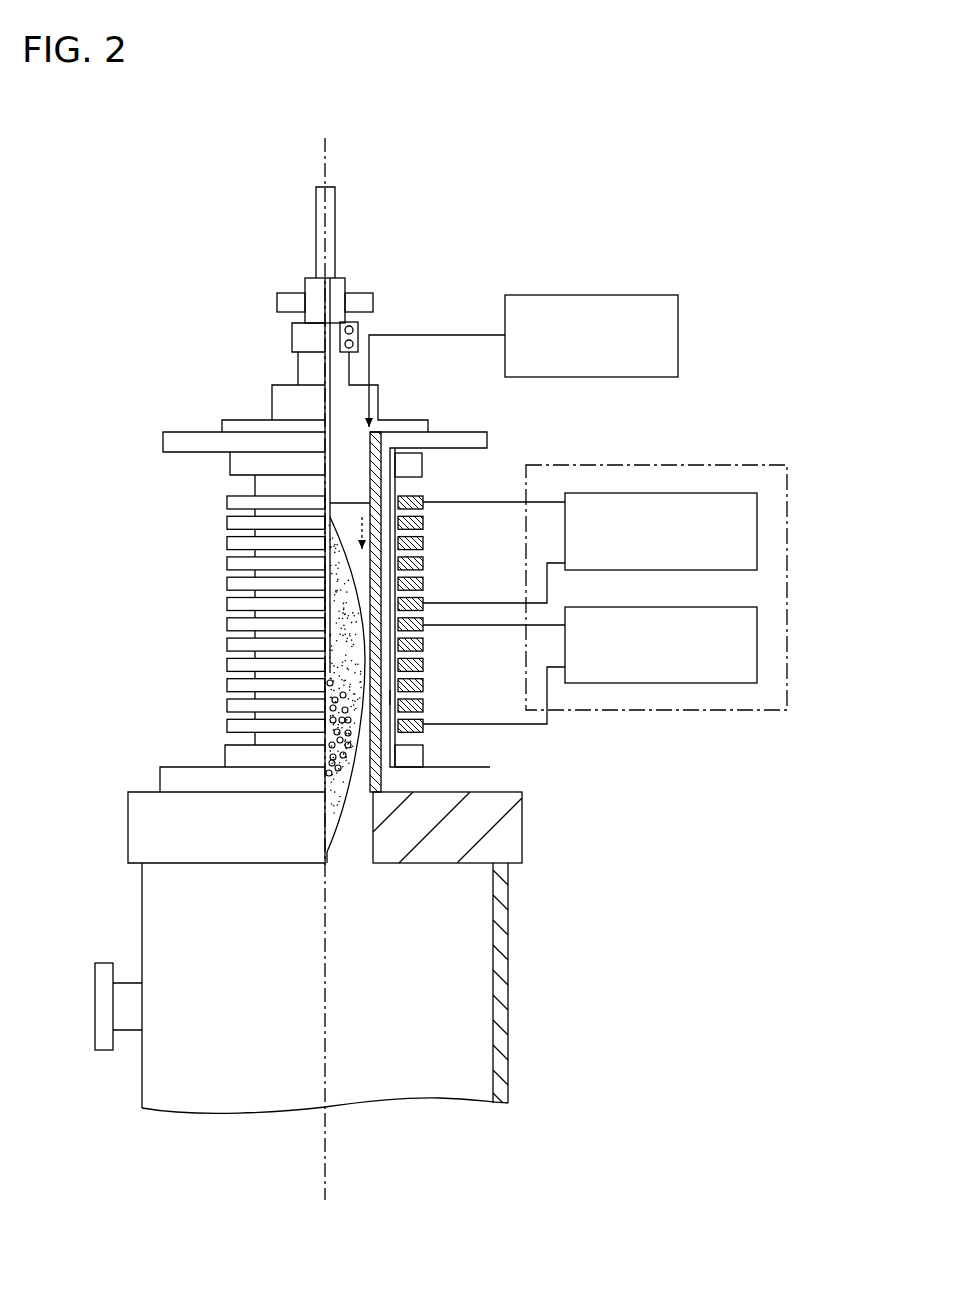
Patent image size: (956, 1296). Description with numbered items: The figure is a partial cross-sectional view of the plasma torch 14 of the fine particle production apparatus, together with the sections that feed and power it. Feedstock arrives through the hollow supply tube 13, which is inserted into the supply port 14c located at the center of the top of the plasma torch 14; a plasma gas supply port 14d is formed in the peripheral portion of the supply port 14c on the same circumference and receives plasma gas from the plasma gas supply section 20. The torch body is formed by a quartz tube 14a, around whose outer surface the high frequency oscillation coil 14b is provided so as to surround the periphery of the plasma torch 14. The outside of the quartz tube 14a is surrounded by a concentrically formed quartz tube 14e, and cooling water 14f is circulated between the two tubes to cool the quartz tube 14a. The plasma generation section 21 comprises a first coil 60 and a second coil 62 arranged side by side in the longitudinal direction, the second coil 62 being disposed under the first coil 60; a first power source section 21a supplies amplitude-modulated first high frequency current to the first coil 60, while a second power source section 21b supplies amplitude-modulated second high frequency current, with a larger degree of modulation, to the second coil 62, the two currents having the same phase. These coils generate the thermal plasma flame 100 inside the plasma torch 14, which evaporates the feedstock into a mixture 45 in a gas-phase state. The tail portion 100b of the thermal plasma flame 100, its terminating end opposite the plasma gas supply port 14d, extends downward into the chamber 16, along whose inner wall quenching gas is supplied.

The supply tube 13 is at (315, 207).
The plasma torch 14 is at (461, 218).
The quartz tube 14a is at (381, 483).
The high frequency oscillation coil 14b is at (207, 556).
The supply port 14c is at (330, 277).
The plasma gas supply port 14d is at (383, 438).
The quartz tube 14e is at (393, 698).
The cooling water 14f is at (385, 738).
The chamber 16 is at (472, 943).
The plasma gas supply section 20 is at (640, 295).
The plasma generation section 21 is at (768, 462).
The first power source section 21a is at (758, 528).
The second power source section 21b is at (758, 641).
The mixture 45 is at (332, 733).
The first coil 60 is at (425, 521).
The second coil 62 is at (425, 664).
The thermal plasma flame 100 is at (348, 638).
The tail portion 100b is at (338, 808).